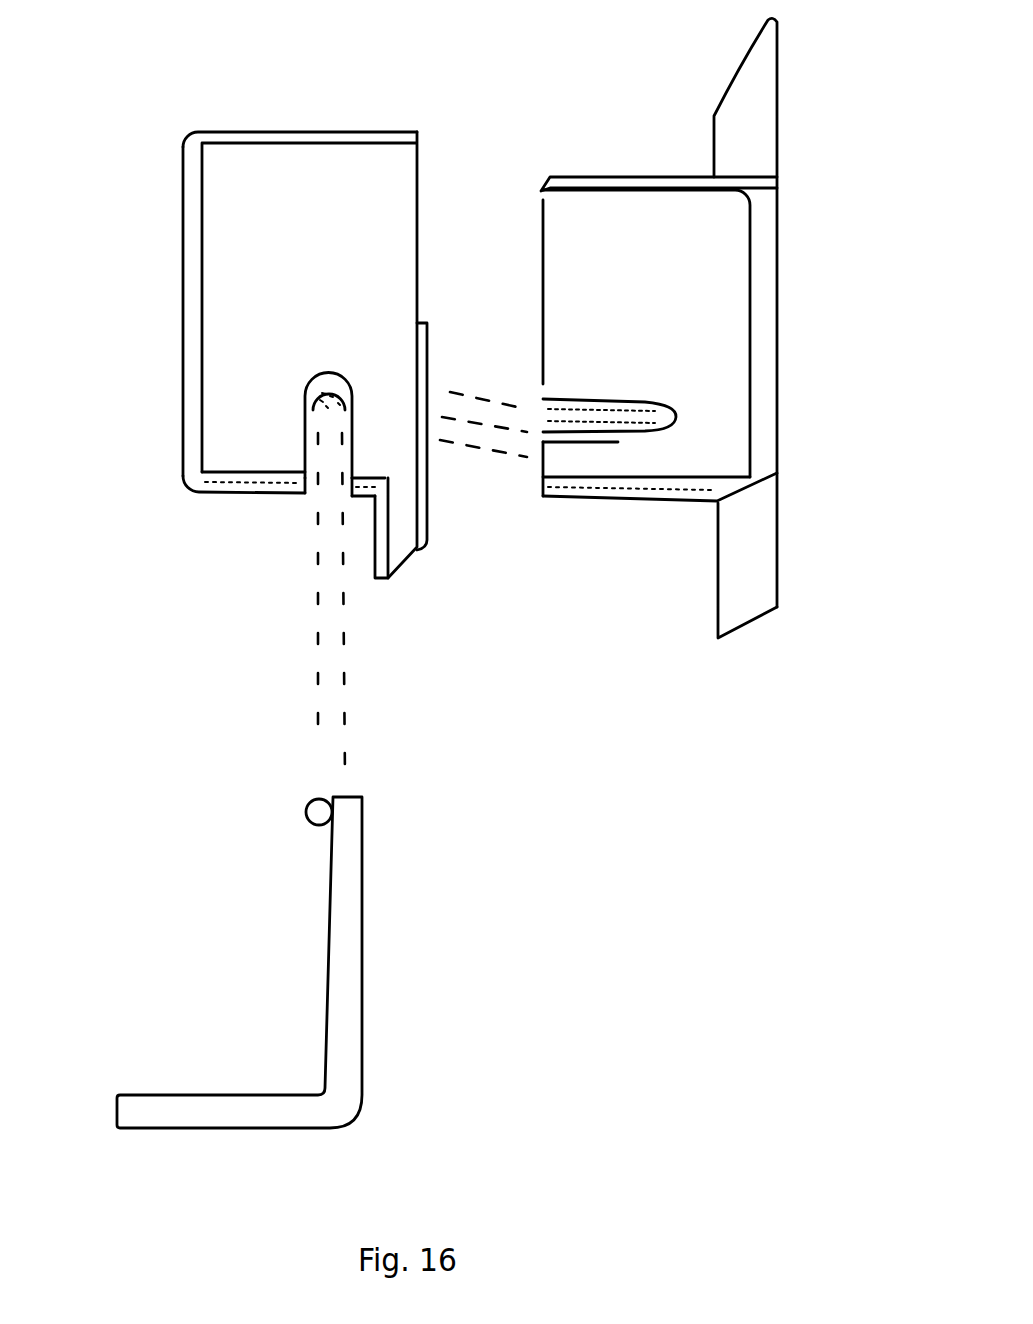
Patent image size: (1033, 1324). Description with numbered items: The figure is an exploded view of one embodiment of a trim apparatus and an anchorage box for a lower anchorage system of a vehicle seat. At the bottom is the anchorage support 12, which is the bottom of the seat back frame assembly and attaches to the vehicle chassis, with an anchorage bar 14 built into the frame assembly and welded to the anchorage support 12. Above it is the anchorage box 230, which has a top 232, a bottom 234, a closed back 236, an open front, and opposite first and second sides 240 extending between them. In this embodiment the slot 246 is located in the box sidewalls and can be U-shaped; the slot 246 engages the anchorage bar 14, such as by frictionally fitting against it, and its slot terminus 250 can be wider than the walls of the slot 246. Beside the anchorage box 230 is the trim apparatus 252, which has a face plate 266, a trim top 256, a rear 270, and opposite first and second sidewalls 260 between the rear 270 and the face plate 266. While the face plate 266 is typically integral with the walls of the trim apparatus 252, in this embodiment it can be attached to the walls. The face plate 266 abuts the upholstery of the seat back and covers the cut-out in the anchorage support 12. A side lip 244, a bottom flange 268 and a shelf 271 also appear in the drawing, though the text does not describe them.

The anchorage support 12 is at (348, 1002).
The anchorage bar 14 is at (307, 825).
The anchorage box 230 is at (250, 170).
The top 232 is at (338, 132).
The bottom 234 is at (223, 493).
The closed back 236 is at (188, 265).
The first side 240 is at (320, 238).
The side lip of first bracket 244 is at (432, 350).
The slot 246 is at (307, 497).
The slot terminus 250 is at (315, 373).
The trim apparatus 252 is at (715, 233).
The trim top 256 is at (647, 177).
The first sidewall 260 is at (662, 328).
The face plate 266 is at (762, 100).
The bottom flange of second bracket 268 is at (603, 435).
The rear 270 is at (543, 218).
The shelf 271 is at (676, 420).